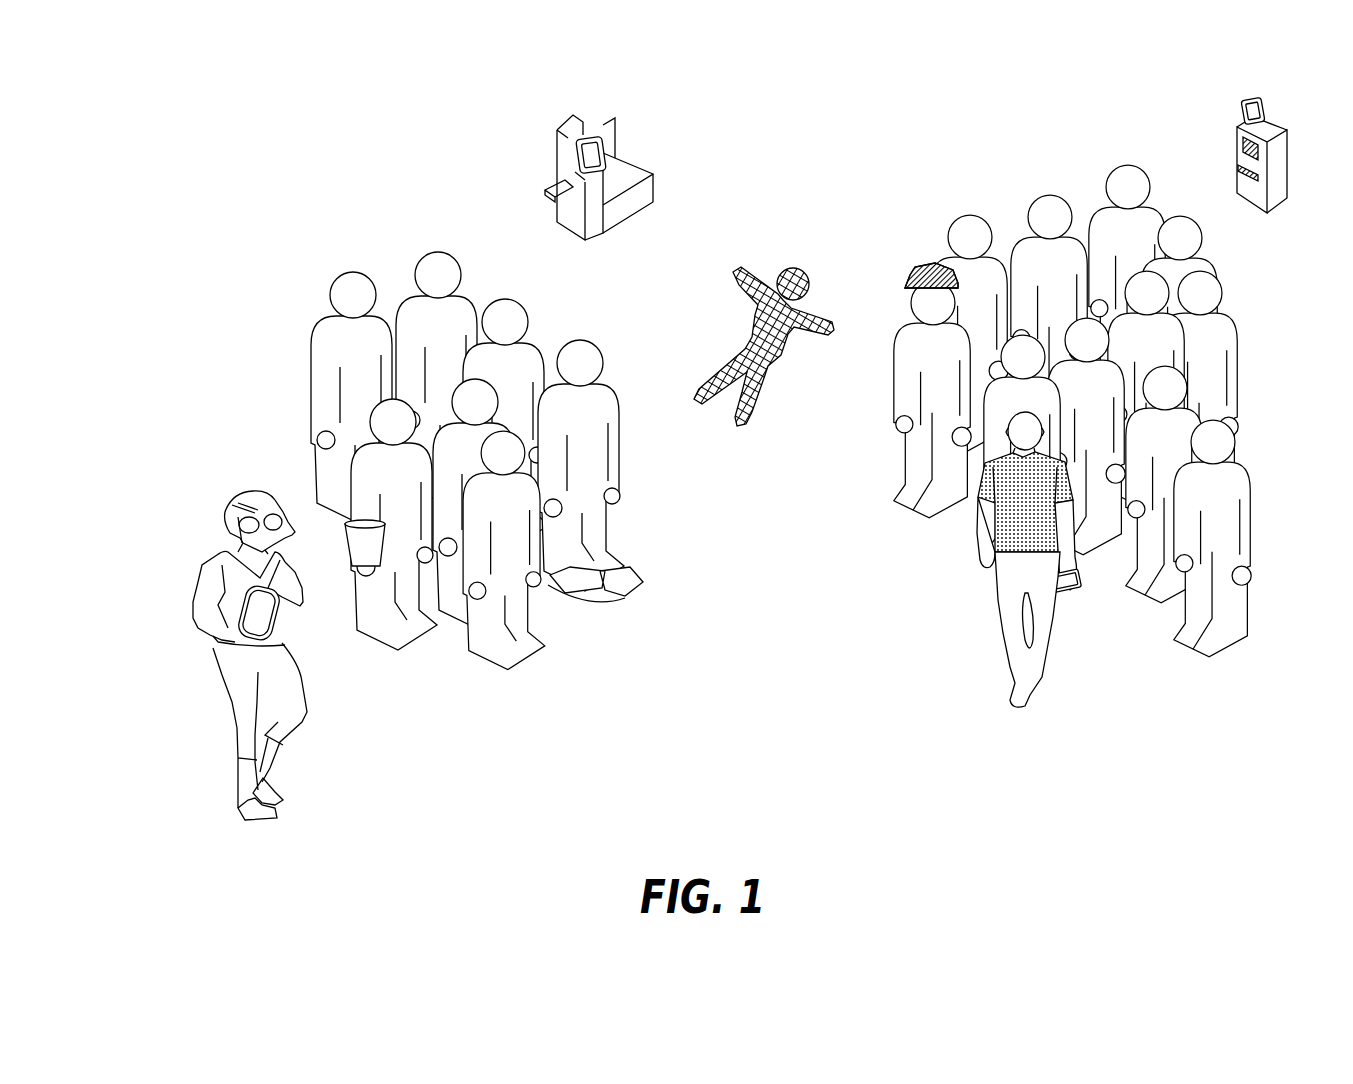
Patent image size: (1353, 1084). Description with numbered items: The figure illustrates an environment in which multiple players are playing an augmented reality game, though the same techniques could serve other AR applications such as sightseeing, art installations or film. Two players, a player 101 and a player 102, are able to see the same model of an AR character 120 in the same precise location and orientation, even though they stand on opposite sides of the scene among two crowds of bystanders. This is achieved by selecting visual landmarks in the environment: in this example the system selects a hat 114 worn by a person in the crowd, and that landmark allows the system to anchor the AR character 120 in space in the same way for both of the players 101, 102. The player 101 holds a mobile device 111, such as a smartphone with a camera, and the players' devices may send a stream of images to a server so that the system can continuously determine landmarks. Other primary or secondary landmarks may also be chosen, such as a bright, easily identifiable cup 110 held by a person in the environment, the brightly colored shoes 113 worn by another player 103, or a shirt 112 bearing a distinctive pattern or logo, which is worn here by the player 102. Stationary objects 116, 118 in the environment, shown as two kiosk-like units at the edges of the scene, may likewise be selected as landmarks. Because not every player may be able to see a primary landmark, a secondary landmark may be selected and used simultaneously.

The player 101 is at (218, 568).
The player 102 is at (1007, 563).
The player 103 is at (585, 352).
The cup 110 is at (357, 537).
The mobile device 111 is at (284, 642).
The shirt 112 is at (1018, 548).
The shoes 113 is at (620, 597).
The hat 114 is at (925, 267).
The stationary object 116 is at (565, 162).
The stationary object 118 is at (1237, 133).
The AR character 120 is at (742, 417).